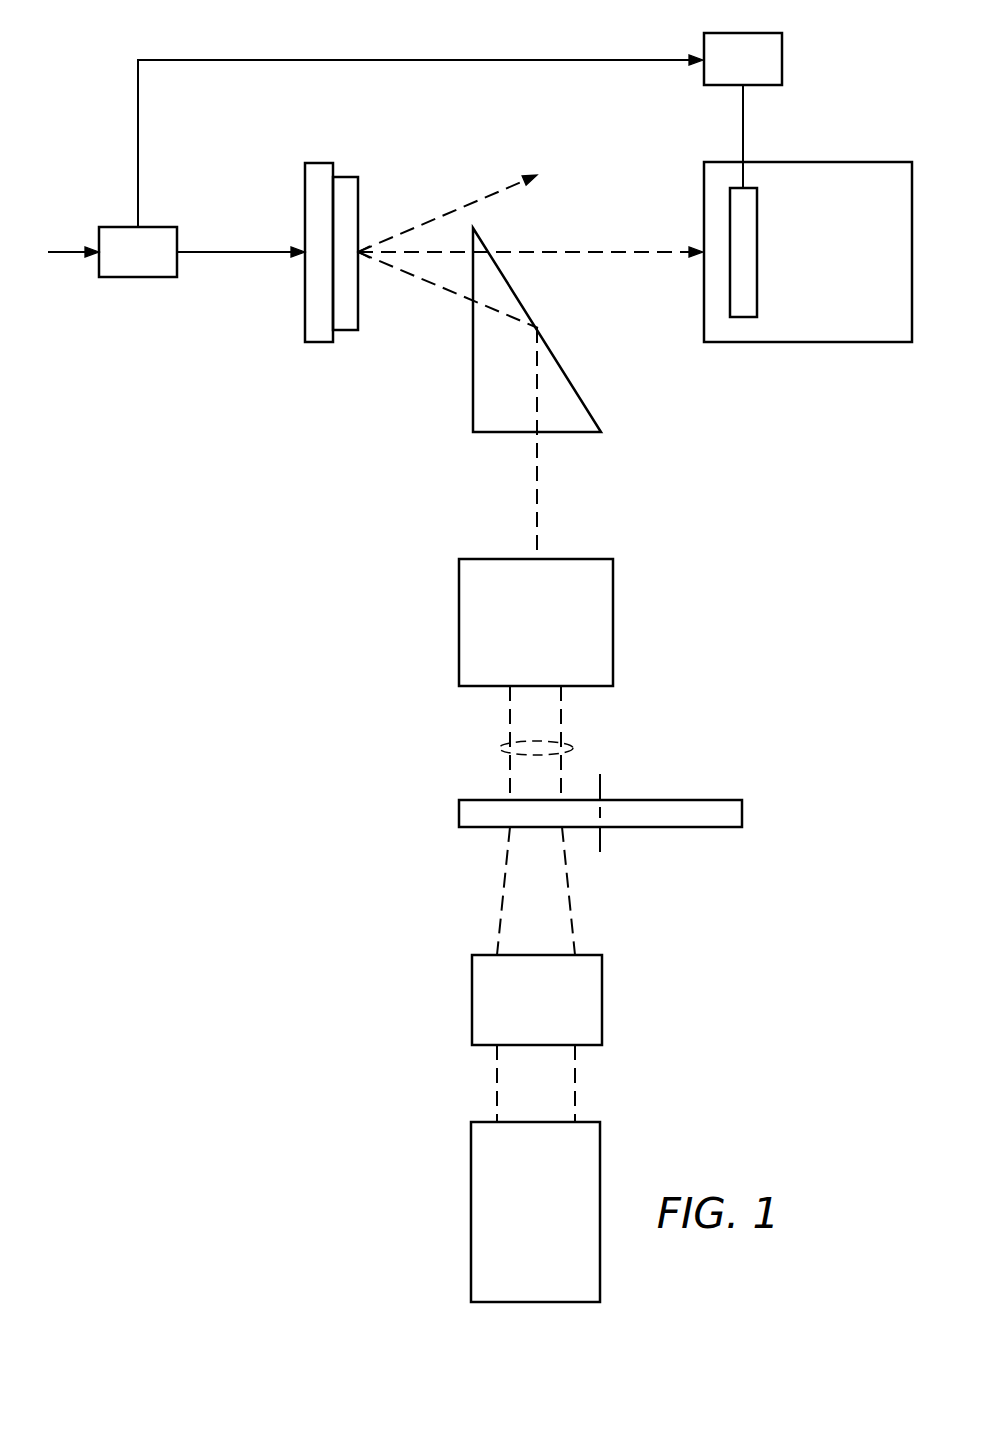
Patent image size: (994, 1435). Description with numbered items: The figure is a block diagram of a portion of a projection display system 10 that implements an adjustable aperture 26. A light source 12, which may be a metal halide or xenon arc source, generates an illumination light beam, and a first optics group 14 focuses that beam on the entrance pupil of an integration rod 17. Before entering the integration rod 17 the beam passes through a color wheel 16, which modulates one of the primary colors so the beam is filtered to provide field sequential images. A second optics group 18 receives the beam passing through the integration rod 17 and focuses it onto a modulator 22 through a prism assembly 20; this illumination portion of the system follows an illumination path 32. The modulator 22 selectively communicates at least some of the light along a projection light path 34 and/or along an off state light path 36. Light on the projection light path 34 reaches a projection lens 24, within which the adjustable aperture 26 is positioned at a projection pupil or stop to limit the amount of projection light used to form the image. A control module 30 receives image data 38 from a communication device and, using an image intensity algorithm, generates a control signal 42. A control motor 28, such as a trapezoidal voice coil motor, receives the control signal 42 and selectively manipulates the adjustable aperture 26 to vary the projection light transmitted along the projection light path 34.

The projection display system 10 is at (208, 826).
The light source 12 is at (471, 1247).
The first optics group 14 is at (472, 1017).
The color wheel 16 is at (706, 800).
The integration rod 17 is at (501, 748).
The second optics group 18 is at (459, 631).
The prism assembly 20 is at (473, 404).
The modulator 22 is at (320, 343).
The projection lens 24 is at (866, 152).
The adjustable aperture 26 is at (757, 250).
The control motor 28 is at (782, 58).
The control module 30 is at (125, 280).
The illumination path 32 is at (534, 478).
The projection light path 34 is at (605, 252).
The off state light path 36 is at (497, 192).
The image data 38 is at (70, 248).
The control signal 42 is at (430, 58).